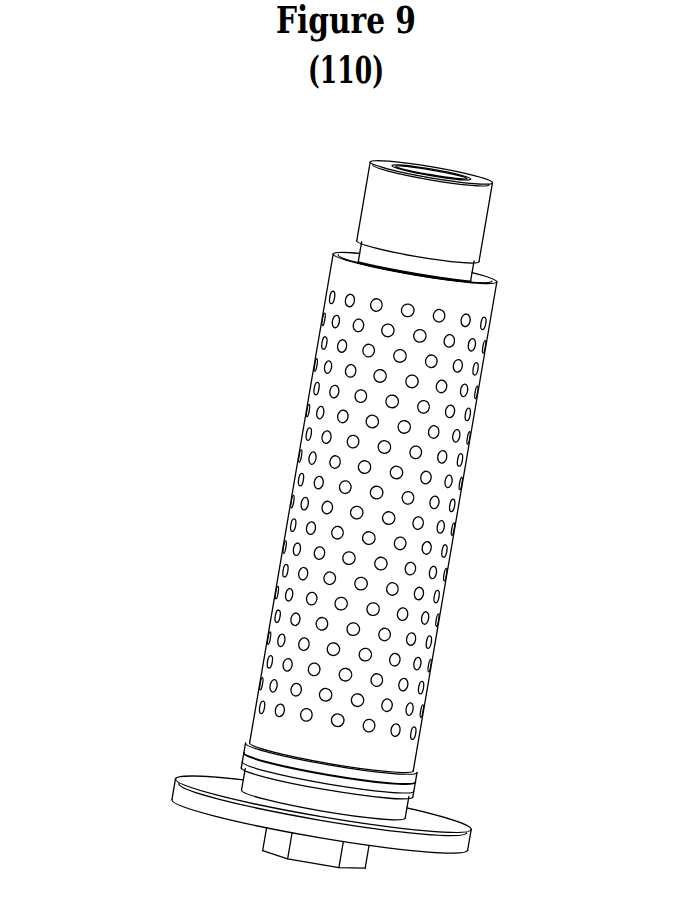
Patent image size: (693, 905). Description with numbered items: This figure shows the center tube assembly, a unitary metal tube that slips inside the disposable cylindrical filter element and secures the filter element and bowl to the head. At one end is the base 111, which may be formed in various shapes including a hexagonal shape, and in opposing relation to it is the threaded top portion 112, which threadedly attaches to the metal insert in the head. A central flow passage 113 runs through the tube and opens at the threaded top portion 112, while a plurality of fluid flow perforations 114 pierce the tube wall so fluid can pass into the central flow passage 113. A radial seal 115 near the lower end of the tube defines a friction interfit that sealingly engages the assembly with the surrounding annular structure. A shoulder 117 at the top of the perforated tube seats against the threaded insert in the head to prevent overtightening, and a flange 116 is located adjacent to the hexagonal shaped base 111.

The base 111 is at (262, 844).
The threaded top portion 112 is at (363, 202).
The central flow passage 113 is at (433, 165).
The fluid flow perforations 114 is at (378, 378).
The radial seal 115 is at (245, 749).
The flange 116 is at (472, 839).
The shoulder 117 is at (483, 272).